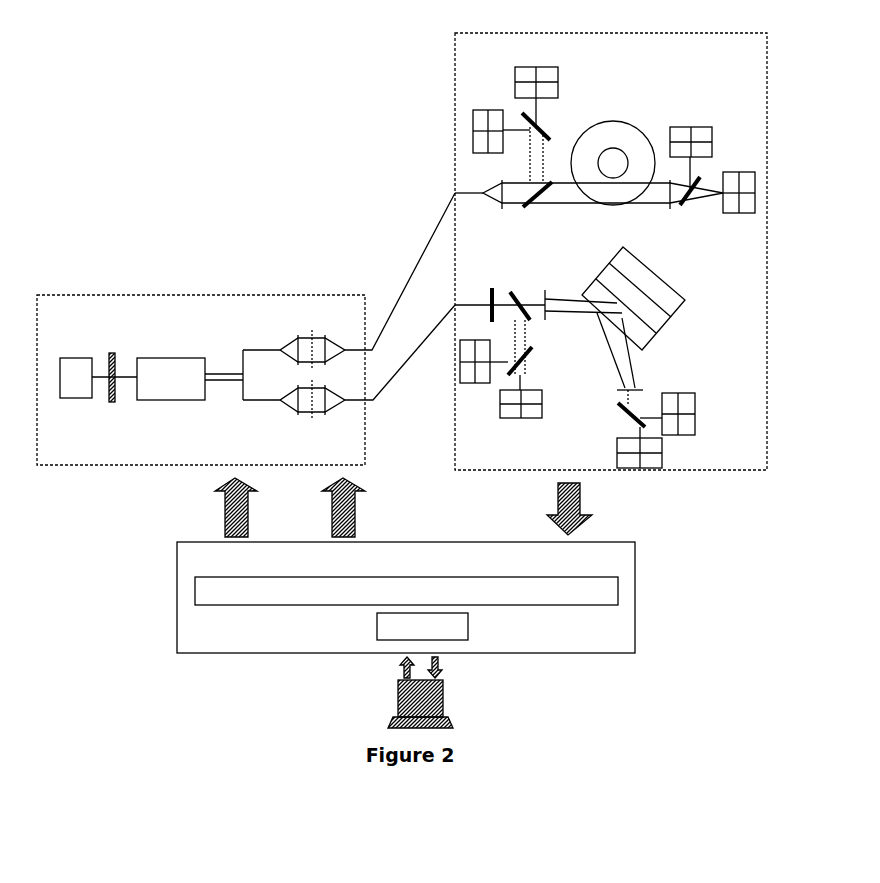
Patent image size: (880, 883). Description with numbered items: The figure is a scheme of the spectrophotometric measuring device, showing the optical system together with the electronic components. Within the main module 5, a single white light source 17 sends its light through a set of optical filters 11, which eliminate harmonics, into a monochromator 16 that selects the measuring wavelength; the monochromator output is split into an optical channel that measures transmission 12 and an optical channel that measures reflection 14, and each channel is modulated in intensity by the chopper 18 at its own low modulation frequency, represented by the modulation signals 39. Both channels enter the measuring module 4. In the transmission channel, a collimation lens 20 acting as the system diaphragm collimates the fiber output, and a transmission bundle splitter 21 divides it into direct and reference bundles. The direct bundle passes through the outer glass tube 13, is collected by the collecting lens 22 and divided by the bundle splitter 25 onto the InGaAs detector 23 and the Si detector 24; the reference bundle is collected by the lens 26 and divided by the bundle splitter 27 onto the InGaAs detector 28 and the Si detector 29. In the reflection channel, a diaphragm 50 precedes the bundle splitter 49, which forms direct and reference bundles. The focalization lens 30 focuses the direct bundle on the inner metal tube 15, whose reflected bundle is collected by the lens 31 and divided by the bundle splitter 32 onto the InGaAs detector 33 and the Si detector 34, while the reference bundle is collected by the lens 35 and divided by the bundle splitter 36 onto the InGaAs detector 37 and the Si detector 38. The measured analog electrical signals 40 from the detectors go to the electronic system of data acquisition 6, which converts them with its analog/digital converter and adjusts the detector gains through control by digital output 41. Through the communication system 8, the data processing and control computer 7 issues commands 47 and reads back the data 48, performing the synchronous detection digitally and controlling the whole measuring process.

The measuring module 4 is at (611, 237).
The main module 5 is at (201, 363).
The electronic system of data acquisition with analog/digital converter 6 is at (406, 591).
The data processing and control computer 7 is at (427, 704).
The communication system 8 is at (422, 626).
The set of optical filters 11 is at (112, 362).
The optical channel that measures transmission 12 is at (347, 277).
The outer glass tube 13 is at (617, 127).
The optical channel that measures reflection 14 is at (349, 368).
The inner metal tube 15 is at (645, 312).
The monochromator 16 is at (171, 395).
The white light source 17 is at (76, 394).
The optical signal modulation system by chopper 18 is at (310, 380).
The collimation lens, transmission channel 20 is at (497, 208).
The transmission bundle splitter to obtain reference 21 is at (537, 209).
The collecting lens for the direct measuring of the transmission channel 22 is at (665, 208).
The InGaAs detector for the direct measuring of the transmission channel 23 is at (739, 177).
The Si detector for the direct measuring of the transmission channel 24 is at (691, 126).
The transmission bundle splitter for direct measuring 25 is at (698, 196).
The collecting lens for the reference measuring of the transmission channel 26 is at (548, 158).
The transmission bundle splitter for the reference measuring 27 is at (551, 119).
The InGaAs detector for the reference measuring of the transmission channel 28 is at (536, 84).
The Si detector for the reference measuring of the transmission channel 29 is at (501, 120).
The focalization lens for the reflection channel 30 is at (580, 292).
The collecting lens for the direct measuring of the reflection channel 31 is at (634, 358).
The reflection bundle splitter for direct measuring 32 is at (625, 419).
The InGaAs detector for the direct measuring of the reflection channel 33 is at (693, 414).
The Si detector for the direct measuring of the reflection channel 34 is at (653, 453).
The collecting lens for the reference measuring of the reflection channel 35 is at (508, 330).
The reflection bundle splitter for reference measuring 36 is at (532, 368).
The InGaAs detector for the reference measuring of the reflection channel 37 is at (521, 419).
The Si detector for the reference measuring of the reflection channel 38 is at (484, 375).
The modulation signals 39 is at (226, 507).
The measured analog electrical signals 40 is at (556, 509).
The control by means of digital output 41 is at (330, 507).
The commands 47 is at (387, 670).
The data 48 is at (453, 669).
The bundle splitter 49 is at (517, 292).
The diaphragm 50 is at (482, 291).